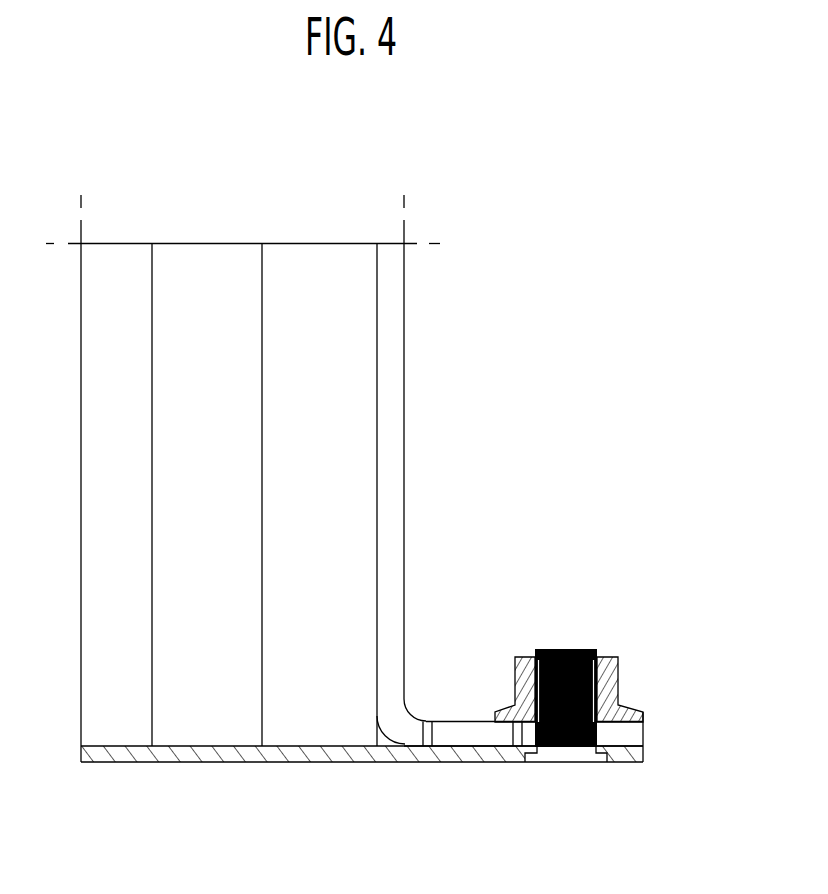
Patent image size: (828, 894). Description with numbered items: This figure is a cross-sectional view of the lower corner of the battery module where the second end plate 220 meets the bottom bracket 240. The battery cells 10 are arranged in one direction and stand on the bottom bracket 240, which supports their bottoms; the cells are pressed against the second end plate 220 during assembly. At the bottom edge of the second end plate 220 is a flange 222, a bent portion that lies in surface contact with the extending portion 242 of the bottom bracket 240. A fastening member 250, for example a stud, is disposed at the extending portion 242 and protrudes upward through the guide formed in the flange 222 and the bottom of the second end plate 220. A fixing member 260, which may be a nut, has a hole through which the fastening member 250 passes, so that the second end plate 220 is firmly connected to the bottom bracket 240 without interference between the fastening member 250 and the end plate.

The battery cell 10 is at (305, 252).
The second end plate 220 is at (414, 436).
The flange 222 is at (450, 733).
The bottom bracket 240 is at (275, 777).
The extending portion 242 is at (477, 760).
The fastening member 250 is at (563, 649).
The fixing member 260 is at (618, 668).